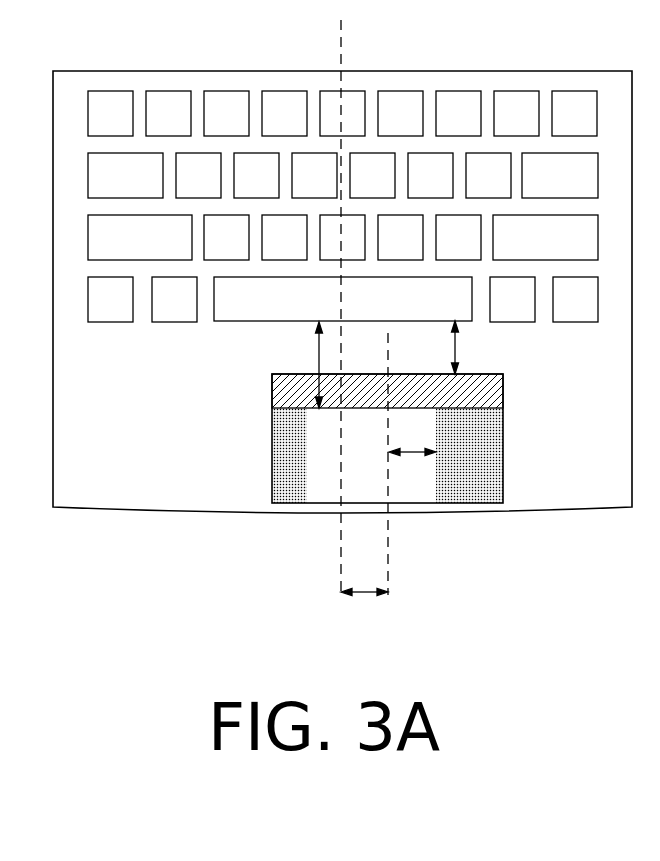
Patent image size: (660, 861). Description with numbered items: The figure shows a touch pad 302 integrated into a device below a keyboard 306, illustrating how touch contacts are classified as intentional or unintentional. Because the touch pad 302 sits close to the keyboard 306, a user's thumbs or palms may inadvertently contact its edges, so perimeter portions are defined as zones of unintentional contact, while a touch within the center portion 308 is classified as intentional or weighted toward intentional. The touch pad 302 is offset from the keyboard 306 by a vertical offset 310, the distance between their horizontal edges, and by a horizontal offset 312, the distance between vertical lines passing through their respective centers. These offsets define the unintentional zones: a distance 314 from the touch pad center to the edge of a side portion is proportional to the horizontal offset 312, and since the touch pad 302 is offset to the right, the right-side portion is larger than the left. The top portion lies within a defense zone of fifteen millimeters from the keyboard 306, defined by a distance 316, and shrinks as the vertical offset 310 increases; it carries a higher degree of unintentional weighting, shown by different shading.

The keyboard 306 is at (106, 70).
The touch pad 302 is at (504, 387).
The center portion 308 is at (409, 489).
The vertical offset 310 is at (458, 346).
The horizontal offset 312 is at (365, 598).
The distance 314 is at (417, 450).
The distance 316 is at (318, 362).